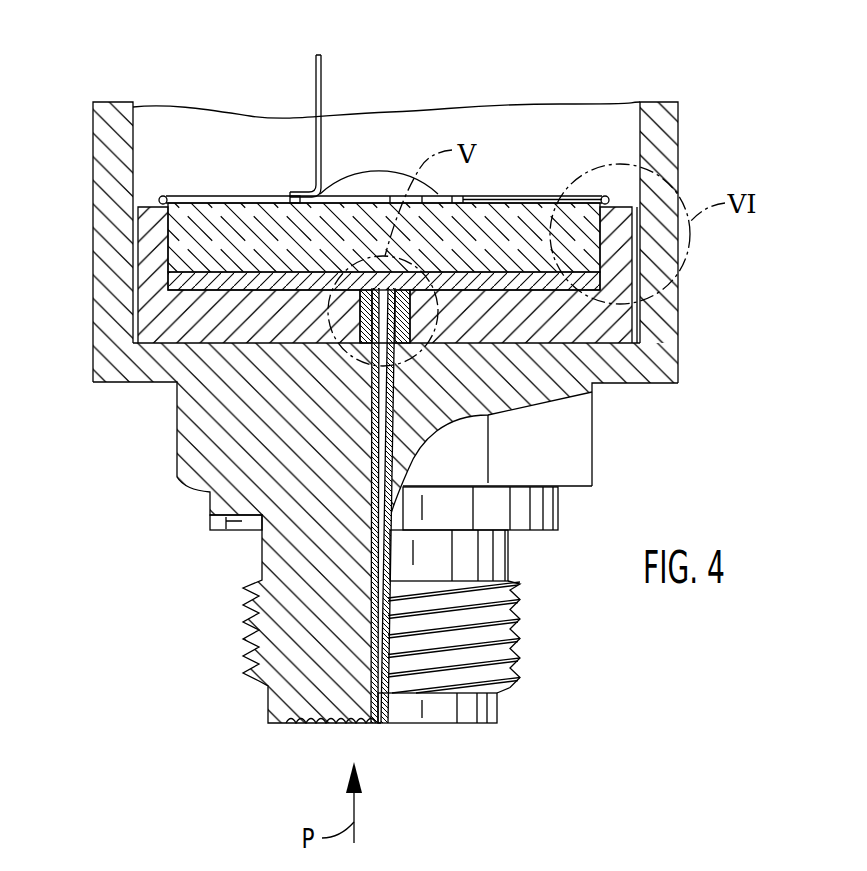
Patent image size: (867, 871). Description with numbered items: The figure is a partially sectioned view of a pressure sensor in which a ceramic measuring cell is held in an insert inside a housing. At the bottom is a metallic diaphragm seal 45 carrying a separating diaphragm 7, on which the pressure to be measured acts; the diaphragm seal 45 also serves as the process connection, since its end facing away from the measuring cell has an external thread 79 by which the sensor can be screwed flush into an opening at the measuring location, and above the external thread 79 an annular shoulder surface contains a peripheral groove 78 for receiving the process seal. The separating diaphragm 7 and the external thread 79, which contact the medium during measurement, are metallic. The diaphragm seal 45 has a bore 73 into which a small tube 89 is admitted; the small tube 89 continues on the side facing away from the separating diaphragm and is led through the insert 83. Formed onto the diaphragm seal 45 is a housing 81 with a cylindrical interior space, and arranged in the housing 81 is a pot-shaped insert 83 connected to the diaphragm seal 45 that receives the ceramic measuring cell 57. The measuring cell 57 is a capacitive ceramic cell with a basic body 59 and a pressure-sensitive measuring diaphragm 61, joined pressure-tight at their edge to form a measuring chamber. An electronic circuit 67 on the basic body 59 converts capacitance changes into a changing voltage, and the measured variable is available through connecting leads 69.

The separating diaphragm 7 is at (318, 724).
The diaphragm seal 45 is at (213, 447).
The ceramic measuring cell 57 is at (503, 178).
The basic body 59 is at (248, 212).
The measuring diaphragm 61 is at (178, 281).
The electronic circuit 67 is at (382, 183).
The connecting leads 69 is at (318, 88).
The bore 73 is at (372, 568).
The peripheral groove 78 is at (213, 523).
The external thread 79 is at (515, 675).
The housing 81 is at (663, 331).
The pot-shaped insert 83 is at (168, 329).
The small tube 89 is at (408, 462).